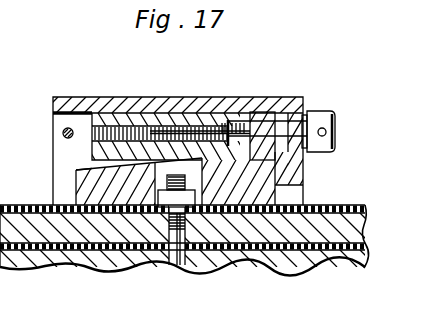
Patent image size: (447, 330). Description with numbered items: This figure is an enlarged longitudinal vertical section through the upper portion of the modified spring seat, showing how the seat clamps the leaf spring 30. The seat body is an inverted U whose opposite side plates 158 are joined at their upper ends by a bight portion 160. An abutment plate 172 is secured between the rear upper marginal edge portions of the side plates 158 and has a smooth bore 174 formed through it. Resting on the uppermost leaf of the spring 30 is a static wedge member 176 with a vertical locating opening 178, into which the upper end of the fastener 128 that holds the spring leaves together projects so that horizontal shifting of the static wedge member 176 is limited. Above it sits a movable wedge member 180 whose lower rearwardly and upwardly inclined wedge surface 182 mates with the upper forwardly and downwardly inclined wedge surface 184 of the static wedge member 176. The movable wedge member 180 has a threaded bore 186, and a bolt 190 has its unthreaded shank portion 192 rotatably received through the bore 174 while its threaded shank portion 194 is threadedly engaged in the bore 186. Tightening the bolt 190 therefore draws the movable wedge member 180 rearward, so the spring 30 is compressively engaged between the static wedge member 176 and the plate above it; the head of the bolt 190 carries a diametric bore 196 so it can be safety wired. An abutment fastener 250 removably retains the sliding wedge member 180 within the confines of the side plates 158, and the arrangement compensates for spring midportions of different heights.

The spring 30 is at (300, 253).
The fastener 128 is at (163, 258).
The side plate 158 is at (60, 145).
The bight portion 160 is at (65, 104).
The abutment plate 172 is at (283, 167).
The smooth bore 174 is at (306, 157).
The static wedge member 176 is at (100, 185).
The vertical locating opening 178 is at (220, 175).
The movable wedge member 180 is at (92, 158).
The wedge surface 182 is at (76, 178).
The wedge surface 184 is at (257, 140).
The threaded bore 186 is at (113, 127).
The bolt 190 is at (337, 130).
The unthreaded shank portion 192 is at (244, 128).
The threaded shank portion 194 is at (193, 128).
The diametric bore 196 is at (322, 128).
The abutment fastener 250 is at (63, 131).